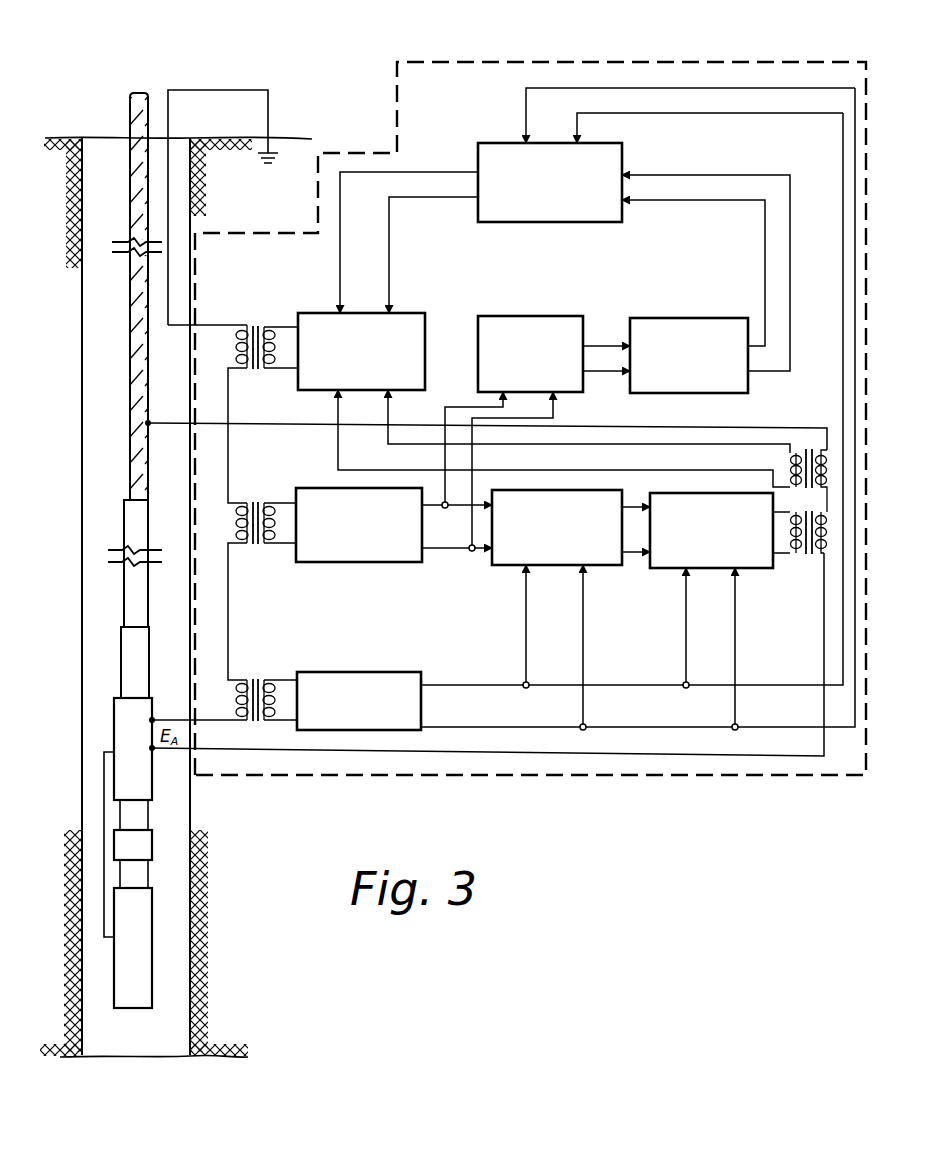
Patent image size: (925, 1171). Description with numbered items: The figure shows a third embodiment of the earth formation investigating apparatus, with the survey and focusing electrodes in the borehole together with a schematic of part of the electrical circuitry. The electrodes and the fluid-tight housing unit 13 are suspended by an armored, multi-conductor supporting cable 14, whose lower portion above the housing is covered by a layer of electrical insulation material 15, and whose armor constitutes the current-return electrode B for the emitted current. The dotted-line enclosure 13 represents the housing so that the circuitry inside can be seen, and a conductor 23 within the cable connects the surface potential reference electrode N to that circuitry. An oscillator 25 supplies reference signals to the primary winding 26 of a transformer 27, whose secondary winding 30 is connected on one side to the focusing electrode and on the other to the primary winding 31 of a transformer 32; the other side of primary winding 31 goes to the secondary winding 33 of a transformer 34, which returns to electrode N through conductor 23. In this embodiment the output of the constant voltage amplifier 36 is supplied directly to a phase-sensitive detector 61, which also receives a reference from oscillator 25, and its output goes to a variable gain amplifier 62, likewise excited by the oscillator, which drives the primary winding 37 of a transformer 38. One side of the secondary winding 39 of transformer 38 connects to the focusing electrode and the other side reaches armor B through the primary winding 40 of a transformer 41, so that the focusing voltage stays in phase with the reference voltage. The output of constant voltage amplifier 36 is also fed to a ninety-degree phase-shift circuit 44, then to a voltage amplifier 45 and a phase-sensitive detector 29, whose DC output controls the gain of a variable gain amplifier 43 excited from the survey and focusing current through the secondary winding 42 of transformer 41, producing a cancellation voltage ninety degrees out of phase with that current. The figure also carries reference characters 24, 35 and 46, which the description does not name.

The fluid-tight housing unit 13 is at (121, 660).
The armored multi-conductor supporting cable 14 is at (130, 392).
The layer of electrical insulation material 15 is at (124, 585).
The conductor 23 is at (208, 90).
The electrode assembly 24 is at (104, 815).
The oscillator 25 is at (357, 672).
The primary winding 26 is at (272, 700).
The transformer 27 is at (246, 684).
The phase-sensitive detector 29 is at (622, 158).
The secondary winding 30 is at (236, 693).
The primary winding 31 is at (238, 513).
The transformer 32 is at (246, 519).
The secondary winding 33 is at (238, 354).
The transformer 34 is at (247, 336).
The secondary winding of input transformer 35 is at (273, 535).
The constant voltage amplifier 36 is at (357, 564).
The primary winding 37 is at (785, 556).
The transformer 38 is at (803, 562).
The secondary winding 39 is at (826, 550).
The primary winding 40 is at (793, 530).
The transformer 41 is at (803, 448).
The secondary winding 42 is at (790, 475).
The variable gain amplifier 43 is at (418, 300).
The 90° phase-shift circuit 44 is at (556, 303).
The voltage amplifier 45 is at (716, 318).
The secondary winding of VGA transformer 46 is at (276, 350).
The phase-sensitive detector 61 is at (506, 567).
The variable gain amplifier 62 is at (668, 570).
The current-return electrode B is at (130, 462).